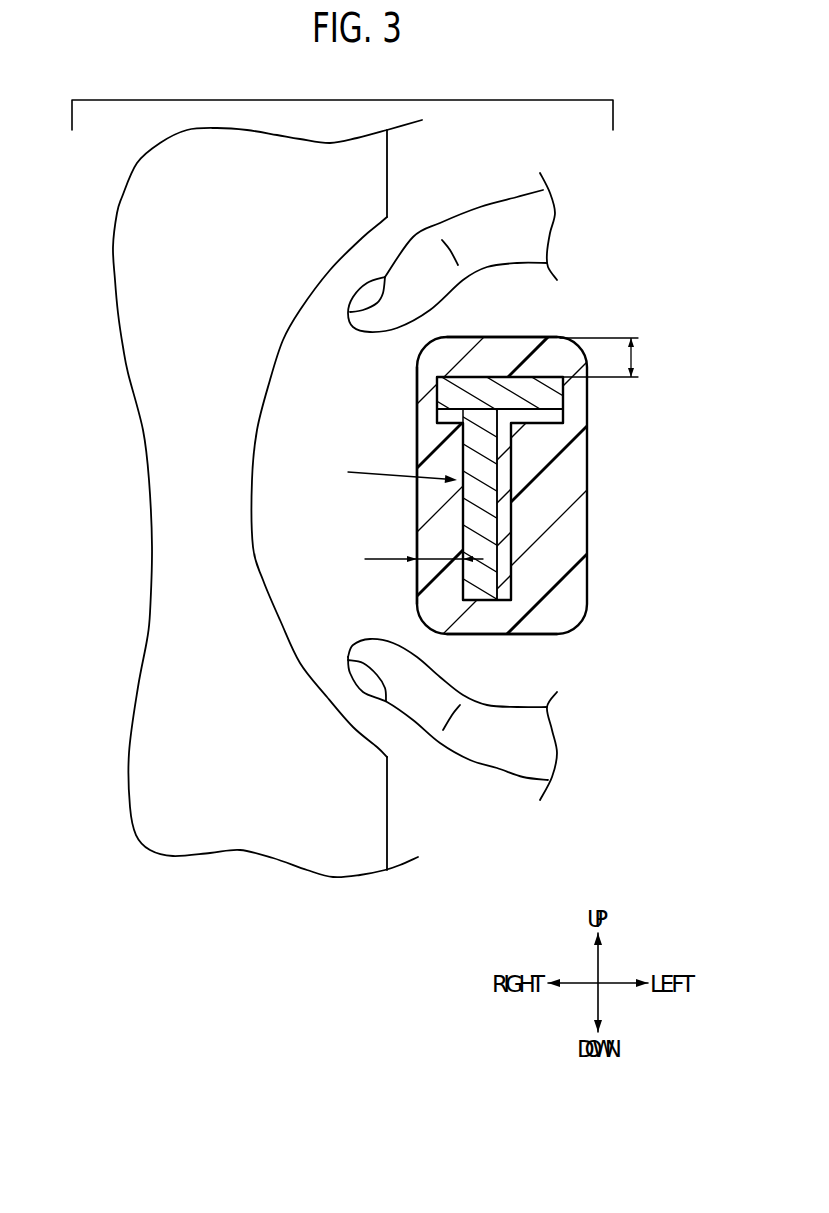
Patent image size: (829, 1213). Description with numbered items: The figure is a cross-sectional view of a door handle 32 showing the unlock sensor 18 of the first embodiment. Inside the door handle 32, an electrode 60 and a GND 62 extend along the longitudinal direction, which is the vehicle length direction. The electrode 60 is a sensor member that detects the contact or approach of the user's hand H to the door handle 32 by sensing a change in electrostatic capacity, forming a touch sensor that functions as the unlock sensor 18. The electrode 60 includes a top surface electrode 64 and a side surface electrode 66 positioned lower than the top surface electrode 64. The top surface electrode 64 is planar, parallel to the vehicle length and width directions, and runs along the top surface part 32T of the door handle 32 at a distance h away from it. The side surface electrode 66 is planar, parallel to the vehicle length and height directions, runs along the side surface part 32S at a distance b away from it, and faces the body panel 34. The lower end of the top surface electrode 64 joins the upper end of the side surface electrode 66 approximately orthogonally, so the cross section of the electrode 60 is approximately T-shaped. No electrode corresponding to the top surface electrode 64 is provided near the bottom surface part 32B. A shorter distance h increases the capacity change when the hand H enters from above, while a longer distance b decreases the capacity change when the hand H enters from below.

The unlock sensor 18 is at (392, 474).
The door handle 32 is at (441, 489).
The top surface part 32T is at (497, 337).
The side surface part 32S is at (417, 508).
The bottom surface part 32B is at (527, 640).
The body panel 34 is at (387, 830).
The electrode 60 is at (441, 506).
The GND 62 is at (512, 512).
The top surface electrode 64 is at (450, 393).
The side surface electrode 66 is at (472, 452).
The hand H is at (489, 200).
The distance h is at (605, 357).
The distance b is at (424, 549).